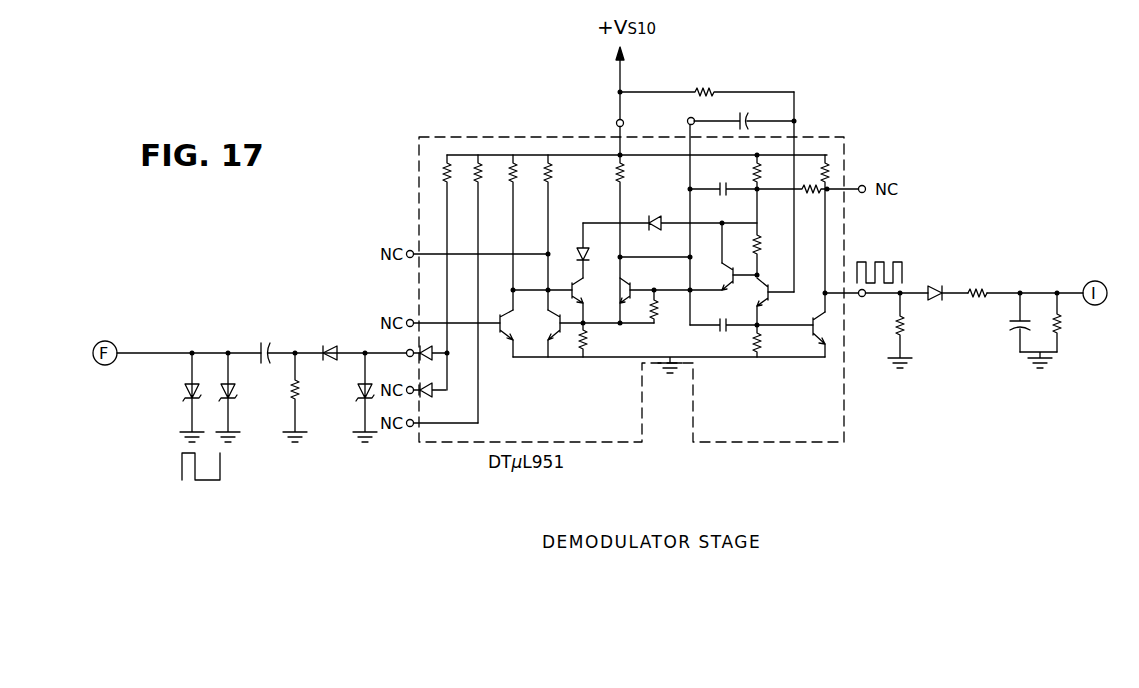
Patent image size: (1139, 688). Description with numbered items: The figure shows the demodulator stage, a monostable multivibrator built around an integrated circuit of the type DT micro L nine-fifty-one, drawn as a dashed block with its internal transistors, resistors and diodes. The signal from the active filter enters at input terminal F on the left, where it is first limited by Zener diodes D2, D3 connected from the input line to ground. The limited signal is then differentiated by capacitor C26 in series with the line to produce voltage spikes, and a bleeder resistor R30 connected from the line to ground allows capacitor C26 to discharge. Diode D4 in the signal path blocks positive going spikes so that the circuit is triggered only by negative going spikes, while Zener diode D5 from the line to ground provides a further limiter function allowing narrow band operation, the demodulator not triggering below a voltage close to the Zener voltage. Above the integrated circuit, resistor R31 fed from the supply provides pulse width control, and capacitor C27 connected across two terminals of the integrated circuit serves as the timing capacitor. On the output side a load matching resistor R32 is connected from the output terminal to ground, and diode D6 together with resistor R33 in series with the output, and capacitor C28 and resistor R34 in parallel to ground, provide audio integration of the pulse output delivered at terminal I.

The Zener diode D2 is at (188, 392).
The Zener diode D3 is at (232, 388).
The capacitor C26 is at (281, 326).
The bleeder resistor R30 is at (306, 397).
The diode D4 is at (334, 338).
The Zener diode D5 is at (362, 391).
The resistor R31 is at (707, 79).
The capacitor C27 is at (742, 115).
The load matching resistor R32 is at (883, 330).
The diode D6 is at (941, 265).
The resistor R33 is at (1003, 267).
The capacitor C28 is at (998, 322).
The resistor R34 is at (1078, 322).